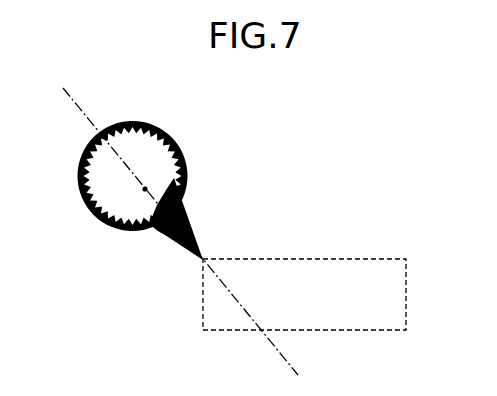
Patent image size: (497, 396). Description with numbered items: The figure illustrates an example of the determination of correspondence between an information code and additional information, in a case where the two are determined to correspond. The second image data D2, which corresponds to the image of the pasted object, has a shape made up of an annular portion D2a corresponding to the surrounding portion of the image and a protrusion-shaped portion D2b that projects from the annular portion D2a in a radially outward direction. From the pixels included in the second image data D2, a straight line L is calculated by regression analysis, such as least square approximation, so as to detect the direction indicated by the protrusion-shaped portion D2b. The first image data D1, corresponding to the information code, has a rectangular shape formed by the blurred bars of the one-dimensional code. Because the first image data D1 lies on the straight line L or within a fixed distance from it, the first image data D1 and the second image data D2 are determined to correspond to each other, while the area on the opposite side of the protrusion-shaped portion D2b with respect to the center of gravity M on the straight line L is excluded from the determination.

The straight line L is at (80, 108).
The second image data D2 is at (140, 175).
The annular portion D2a is at (96, 207).
The protrusion-shaped portion D2b is at (186, 232).
The center of gravity M is at (144, 189).
The first image data D1 is at (378, 258).